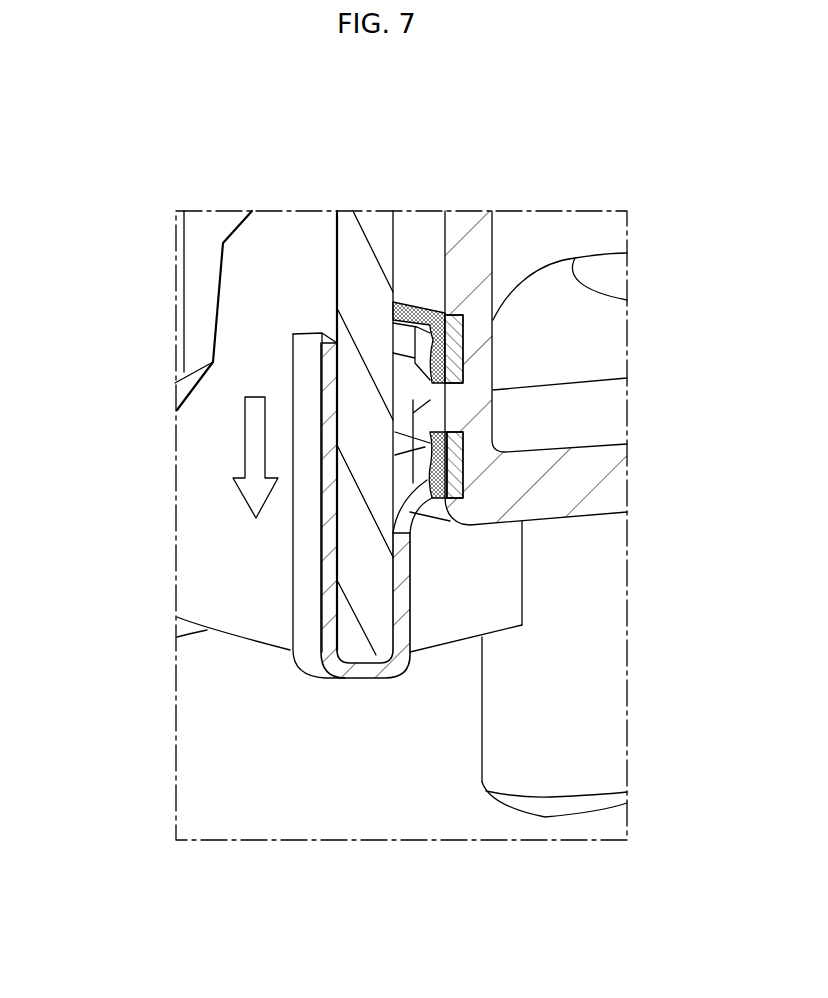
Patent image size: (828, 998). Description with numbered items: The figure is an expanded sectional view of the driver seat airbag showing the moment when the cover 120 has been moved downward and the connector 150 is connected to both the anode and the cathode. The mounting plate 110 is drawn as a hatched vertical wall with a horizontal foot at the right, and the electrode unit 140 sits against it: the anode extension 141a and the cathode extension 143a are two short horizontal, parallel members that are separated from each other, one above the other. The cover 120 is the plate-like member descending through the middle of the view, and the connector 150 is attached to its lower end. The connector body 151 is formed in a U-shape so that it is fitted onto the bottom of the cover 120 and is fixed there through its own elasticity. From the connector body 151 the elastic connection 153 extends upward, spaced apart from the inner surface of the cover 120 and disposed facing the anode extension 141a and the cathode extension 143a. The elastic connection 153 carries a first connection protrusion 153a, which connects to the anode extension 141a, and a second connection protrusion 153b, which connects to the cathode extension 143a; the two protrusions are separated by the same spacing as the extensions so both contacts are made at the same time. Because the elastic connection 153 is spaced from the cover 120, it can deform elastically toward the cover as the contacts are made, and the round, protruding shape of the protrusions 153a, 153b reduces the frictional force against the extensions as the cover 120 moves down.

The mounting plate 110 is at (472, 238).
The cover 120 is at (283, 272).
The electrode unit 140 is at (549, 396).
The anode extension 141a is at (455, 355).
The cathode extension 143a is at (455, 457).
The connector 150 is at (359, 575).
The connector body 151 is at (313, 553).
The elastic connection 153 is at (232, 403).
The first connection protrusion 153a is at (395, 355).
The second connection protrusion 153b is at (395, 433).